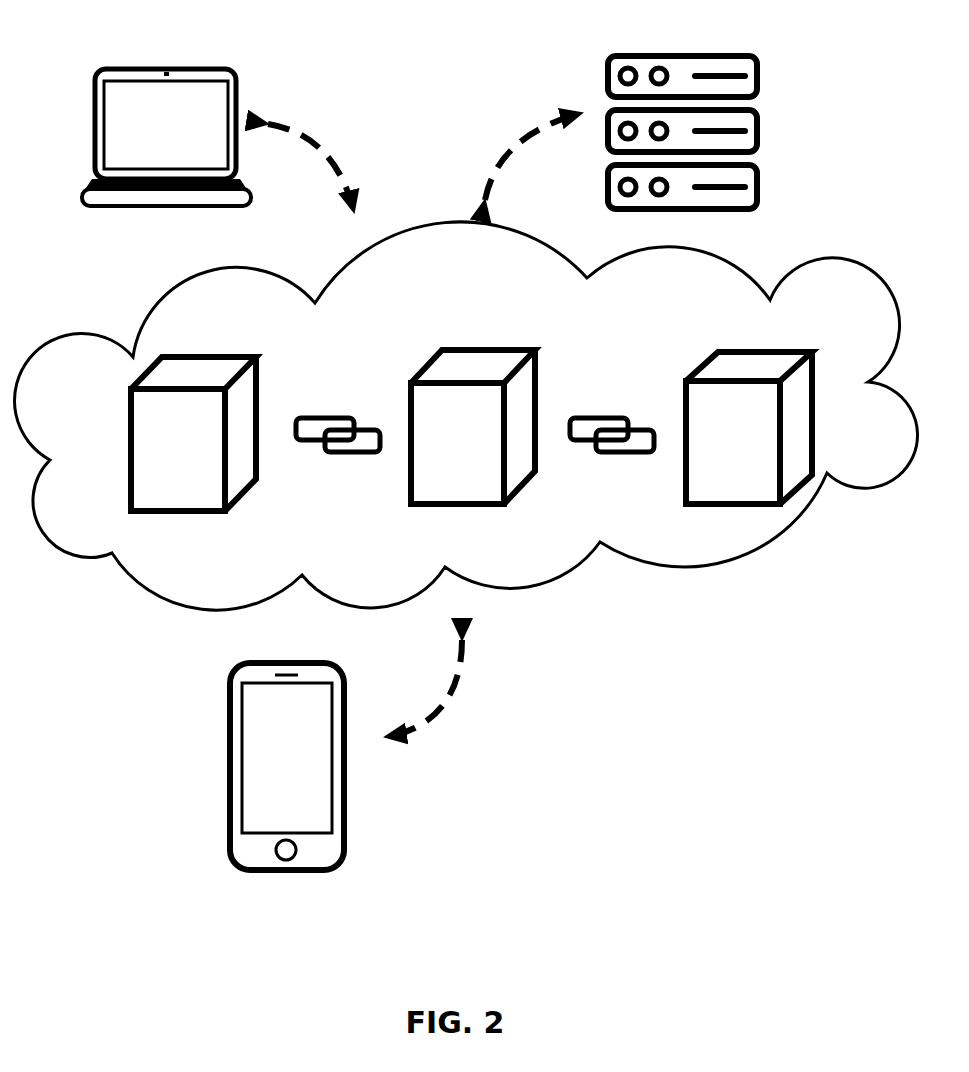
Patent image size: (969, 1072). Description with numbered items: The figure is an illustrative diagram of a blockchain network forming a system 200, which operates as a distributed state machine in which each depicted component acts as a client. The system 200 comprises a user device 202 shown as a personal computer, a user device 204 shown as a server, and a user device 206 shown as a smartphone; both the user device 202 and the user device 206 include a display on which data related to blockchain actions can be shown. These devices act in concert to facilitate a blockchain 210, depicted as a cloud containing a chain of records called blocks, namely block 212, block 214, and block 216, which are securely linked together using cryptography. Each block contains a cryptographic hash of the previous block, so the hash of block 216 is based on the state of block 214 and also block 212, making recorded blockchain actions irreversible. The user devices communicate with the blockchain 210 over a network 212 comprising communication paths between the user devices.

The system 200 is at (468, 54).
The user device 202 is at (210, 110).
The user device 204 is at (772, 156).
The user device 206 is at (302, 790).
The blockchain 210 is at (461, 314).
The block 212 is at (178, 475).
The block 214 is at (469, 478).
The block 216 is at (744, 366).